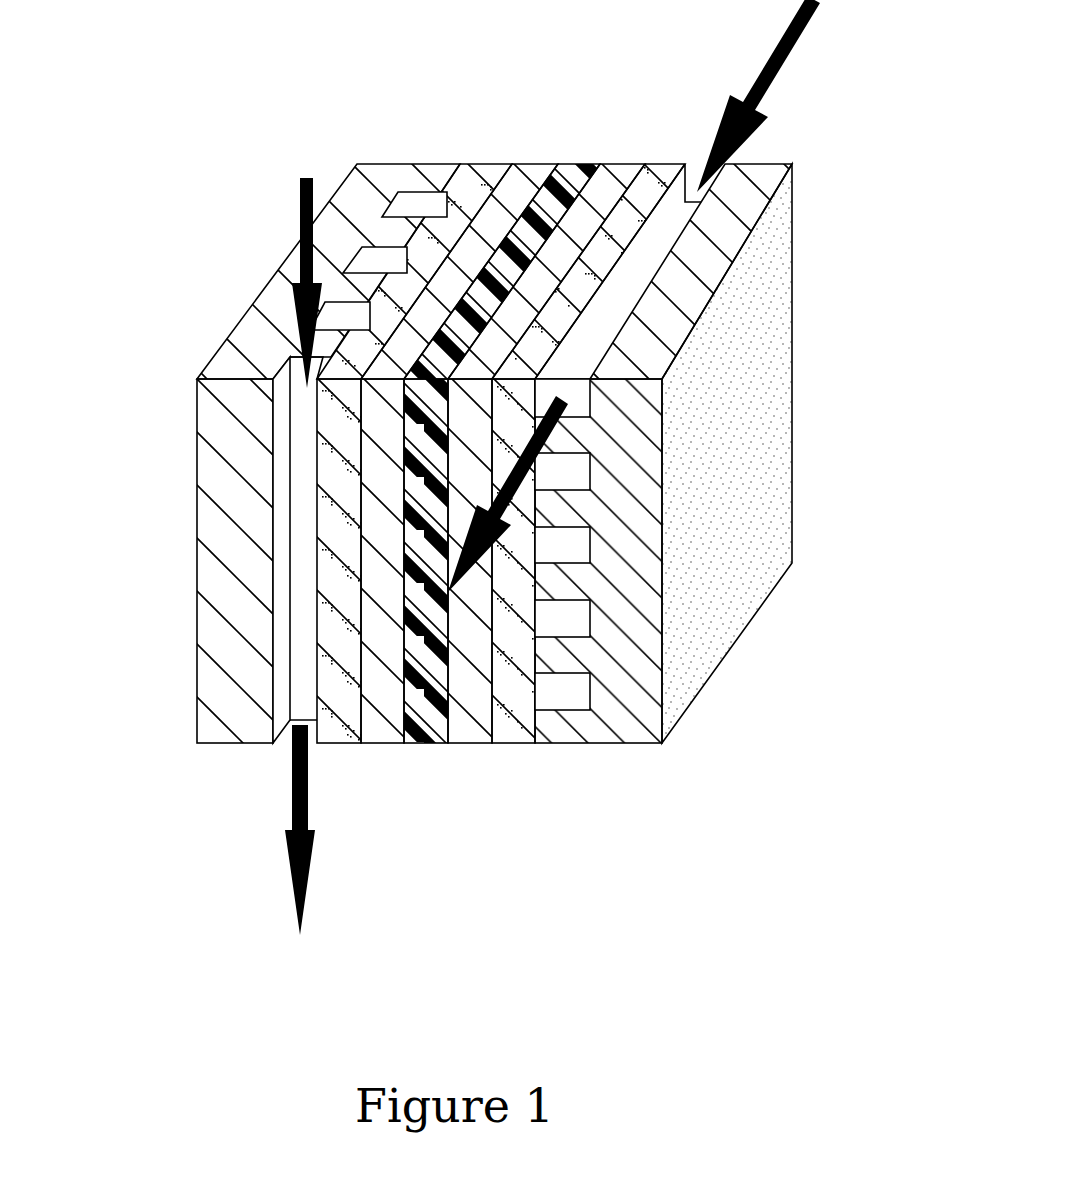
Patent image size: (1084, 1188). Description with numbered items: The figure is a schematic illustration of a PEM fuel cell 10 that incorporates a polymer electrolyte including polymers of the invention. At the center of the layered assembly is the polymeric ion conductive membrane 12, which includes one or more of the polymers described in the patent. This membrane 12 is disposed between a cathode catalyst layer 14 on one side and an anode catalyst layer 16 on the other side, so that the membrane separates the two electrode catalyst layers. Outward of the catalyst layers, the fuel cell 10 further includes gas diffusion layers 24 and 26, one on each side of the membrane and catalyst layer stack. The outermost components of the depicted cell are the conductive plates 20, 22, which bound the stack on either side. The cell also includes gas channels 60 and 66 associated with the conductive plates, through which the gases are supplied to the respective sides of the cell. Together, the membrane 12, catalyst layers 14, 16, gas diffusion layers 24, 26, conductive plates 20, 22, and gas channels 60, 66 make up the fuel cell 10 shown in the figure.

The PEM fuel cell 10 is at (253, 110).
The polymeric ion conductive membrane 12 is at (570, 172).
The cathode catalyst layer 14 is at (605, 182).
The anode catalyst layer 16 is at (534, 172).
The conductive plate 20 is at (772, 287).
The conductive plate 22 is at (245, 365).
The gas diffusion layer 24 is at (483, 182).
The gas diffusion layer 26 is at (652, 190).
The gas channel 60 is at (415, 203).
The gas channel 66 is at (553, 618).